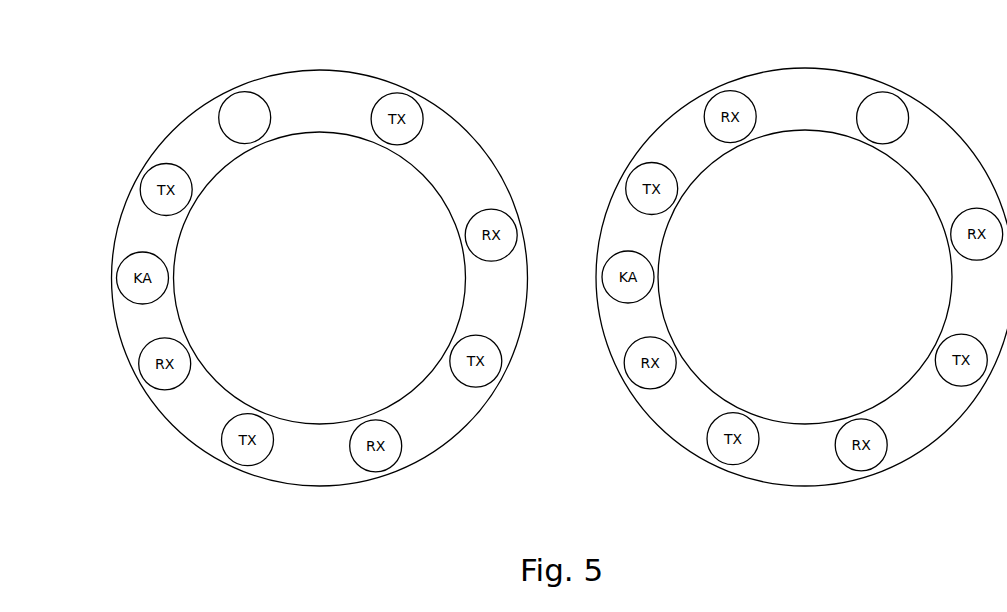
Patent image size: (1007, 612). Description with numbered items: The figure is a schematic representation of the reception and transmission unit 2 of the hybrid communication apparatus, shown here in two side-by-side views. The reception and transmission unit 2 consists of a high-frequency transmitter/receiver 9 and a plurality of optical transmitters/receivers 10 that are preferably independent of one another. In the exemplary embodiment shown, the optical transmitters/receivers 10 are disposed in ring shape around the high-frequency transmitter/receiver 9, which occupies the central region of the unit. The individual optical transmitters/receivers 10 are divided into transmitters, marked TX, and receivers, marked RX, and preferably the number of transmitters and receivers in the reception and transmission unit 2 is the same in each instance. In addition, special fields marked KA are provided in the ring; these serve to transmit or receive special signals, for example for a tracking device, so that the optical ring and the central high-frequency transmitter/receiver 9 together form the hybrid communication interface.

The reception and transmission unit 2 is at (497, 503).
The high-frequency transmitter/receiver 9 is at (316, 166).
The optical transmitters/receivers 10 is at (237, 103).